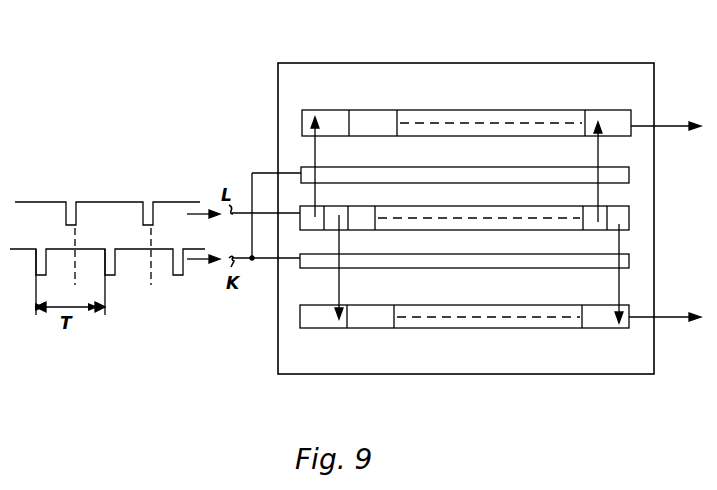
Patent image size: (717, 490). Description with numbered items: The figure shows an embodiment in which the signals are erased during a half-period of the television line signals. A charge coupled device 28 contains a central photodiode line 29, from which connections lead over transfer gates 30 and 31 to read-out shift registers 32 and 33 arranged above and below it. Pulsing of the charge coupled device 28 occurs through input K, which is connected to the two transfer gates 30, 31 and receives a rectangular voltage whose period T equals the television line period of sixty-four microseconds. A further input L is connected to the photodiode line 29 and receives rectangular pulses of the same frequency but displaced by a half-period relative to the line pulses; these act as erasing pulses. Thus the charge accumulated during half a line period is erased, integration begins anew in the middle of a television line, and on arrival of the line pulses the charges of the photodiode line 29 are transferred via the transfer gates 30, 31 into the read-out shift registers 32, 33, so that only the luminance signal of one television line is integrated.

The charge coupled device 28 is at (448, 76).
The photodiode line 29 is at (625, 218).
The transfer gate 30 is at (629, 178).
The transfer gate 31 is at (629, 263).
The read-out shift register 32 is at (618, 117).
The read-out shift register 33 is at (627, 322).